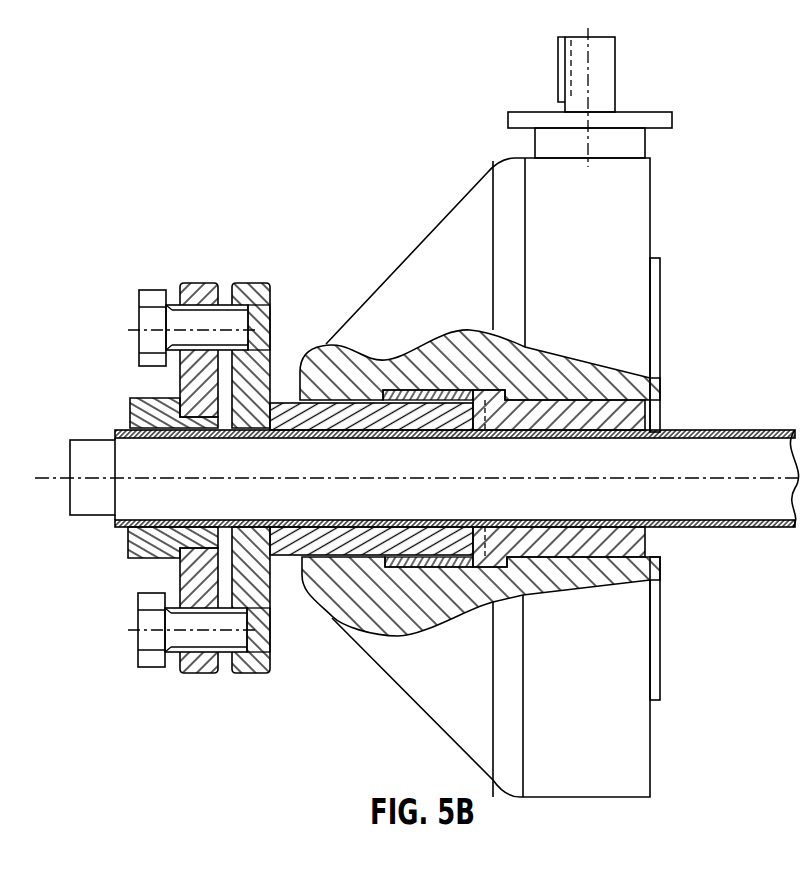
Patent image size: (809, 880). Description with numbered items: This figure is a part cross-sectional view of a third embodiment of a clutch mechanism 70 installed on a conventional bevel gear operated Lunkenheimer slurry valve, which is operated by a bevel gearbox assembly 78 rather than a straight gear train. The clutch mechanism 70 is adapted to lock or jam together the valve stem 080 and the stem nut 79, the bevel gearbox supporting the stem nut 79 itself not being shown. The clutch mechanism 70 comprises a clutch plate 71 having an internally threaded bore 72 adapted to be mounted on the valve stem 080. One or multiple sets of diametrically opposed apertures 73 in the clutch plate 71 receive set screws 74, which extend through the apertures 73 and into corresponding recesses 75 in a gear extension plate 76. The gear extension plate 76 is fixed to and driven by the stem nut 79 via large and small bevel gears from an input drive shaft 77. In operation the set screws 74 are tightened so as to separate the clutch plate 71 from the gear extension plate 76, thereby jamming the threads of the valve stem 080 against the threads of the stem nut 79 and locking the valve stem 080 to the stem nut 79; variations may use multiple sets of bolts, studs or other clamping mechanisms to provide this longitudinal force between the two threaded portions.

The clutch mechanism 70 is at (193, 447).
The clutch plate 71 is at (177, 565).
The internally threaded bore 72 is at (130, 523).
The apertures 73 is at (203, 311).
The set screws 74 is at (142, 320).
The recesses 75 is at (250, 318).
The gear extension plate 76 is at (262, 292).
The input drive shaft 77 is at (603, 78).
The bevel gearbox assembly 78 is at (608, 258).
The stem nut 79 is at (643, 413).
The valve stem 080 is at (742, 503).